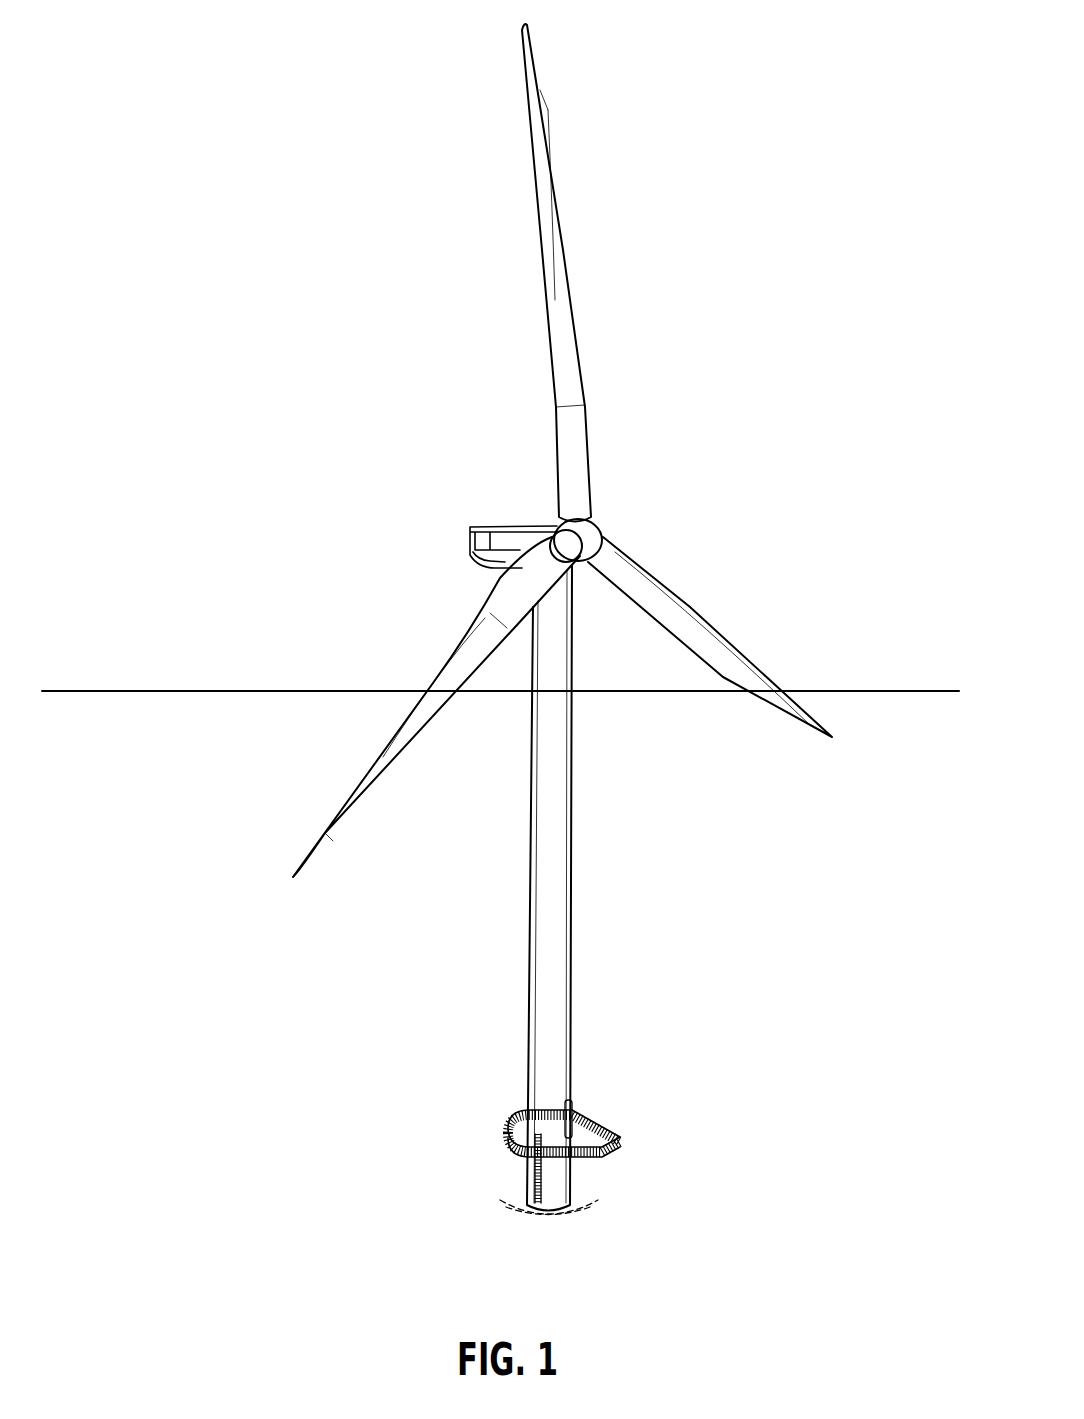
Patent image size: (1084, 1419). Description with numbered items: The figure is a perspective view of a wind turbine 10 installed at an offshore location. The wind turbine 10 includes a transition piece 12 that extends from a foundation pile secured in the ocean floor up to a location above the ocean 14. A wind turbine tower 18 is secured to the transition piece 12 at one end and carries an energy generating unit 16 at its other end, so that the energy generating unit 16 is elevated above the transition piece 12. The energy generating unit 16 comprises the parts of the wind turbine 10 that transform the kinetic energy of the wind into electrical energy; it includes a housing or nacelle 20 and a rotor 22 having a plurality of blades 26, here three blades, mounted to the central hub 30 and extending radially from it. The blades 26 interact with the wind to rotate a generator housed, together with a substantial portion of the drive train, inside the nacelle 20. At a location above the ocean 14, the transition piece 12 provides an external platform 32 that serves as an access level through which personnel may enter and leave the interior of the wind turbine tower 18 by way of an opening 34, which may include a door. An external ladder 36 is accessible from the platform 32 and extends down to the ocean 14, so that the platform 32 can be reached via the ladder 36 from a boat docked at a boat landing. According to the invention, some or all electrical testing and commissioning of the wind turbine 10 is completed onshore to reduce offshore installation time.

The wind turbine 10 is at (163, 586).
The transition piece 12 is at (576, 1180).
The ocean 14 is at (788, 1192).
The energy generating unit 16 is at (666, 445).
The wind turbine tower 18 is at (538, 850).
The nacelle 20 is at (514, 523).
The rotor 22 is at (607, 527).
The blades 26 is at (578, 354).
The central hub 30 is at (600, 521).
The external platform 32 is at (612, 1150).
The opening 34 is at (580, 1117).
The external ladder 36 is at (531, 1170).